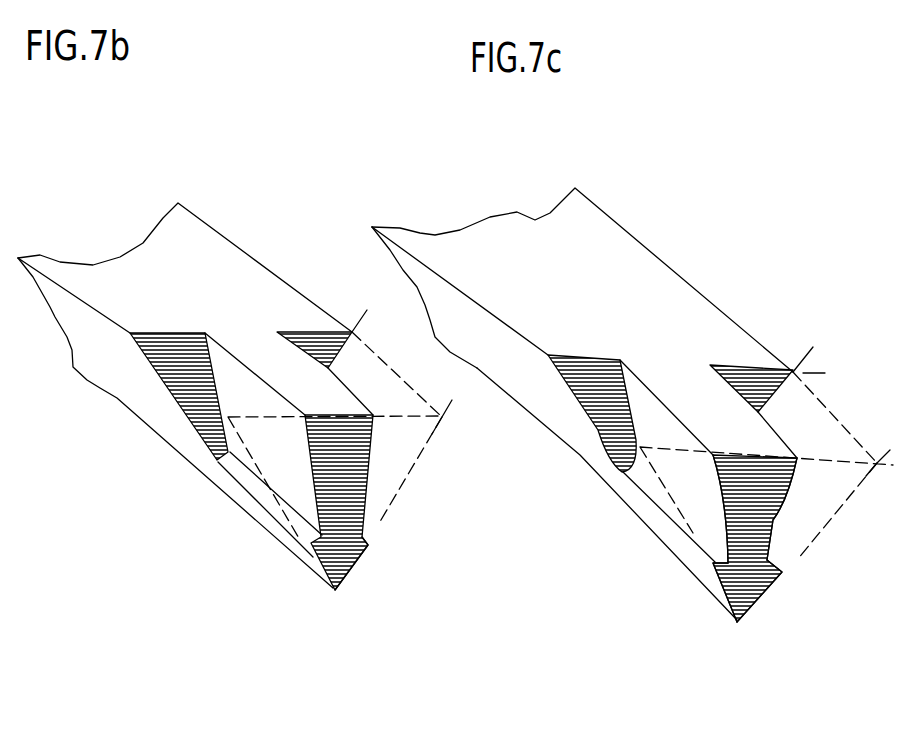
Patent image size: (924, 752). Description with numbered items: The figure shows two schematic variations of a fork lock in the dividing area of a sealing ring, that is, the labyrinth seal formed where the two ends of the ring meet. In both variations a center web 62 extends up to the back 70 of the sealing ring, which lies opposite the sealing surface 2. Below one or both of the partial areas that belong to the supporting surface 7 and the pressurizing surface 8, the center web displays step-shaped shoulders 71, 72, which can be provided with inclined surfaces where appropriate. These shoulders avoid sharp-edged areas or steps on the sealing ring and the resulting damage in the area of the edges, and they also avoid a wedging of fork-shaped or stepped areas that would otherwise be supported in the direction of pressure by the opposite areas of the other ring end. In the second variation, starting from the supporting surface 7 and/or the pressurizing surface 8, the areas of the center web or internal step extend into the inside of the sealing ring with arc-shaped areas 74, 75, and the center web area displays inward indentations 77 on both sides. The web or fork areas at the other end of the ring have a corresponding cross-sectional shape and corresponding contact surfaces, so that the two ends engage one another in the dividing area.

In FIG. 7b, the sealing surface 2 is at (183, 258).
In FIG. 7c, the sealing surface 2 is at (615, 265).
In FIG. 7c, the supporting surface 7 is at (590, 452).
In FIG. 7c, the pressurizing surface 8 is at (845, 517).
In FIG. 7b, the center web 62 is at (365, 543).
In FIG. 7c, the center web 62 is at (768, 580).
In FIG. 7b, the back 70 is at (337, 593).
In FIG. 7c, the back 70 is at (737, 627).
In FIG. 7b, the step-shaped shoulder 71 is at (297, 517).
In FIG. 7b, the step-shaped shoulder 72 is at (367, 530).
In FIG. 7c, the arc-shaped area 74 is at (713, 560).
In FIG. 7c, the arc-shaped area 75 is at (643, 392).
In FIG. 7c, the inward indentation 77 is at (697, 507).